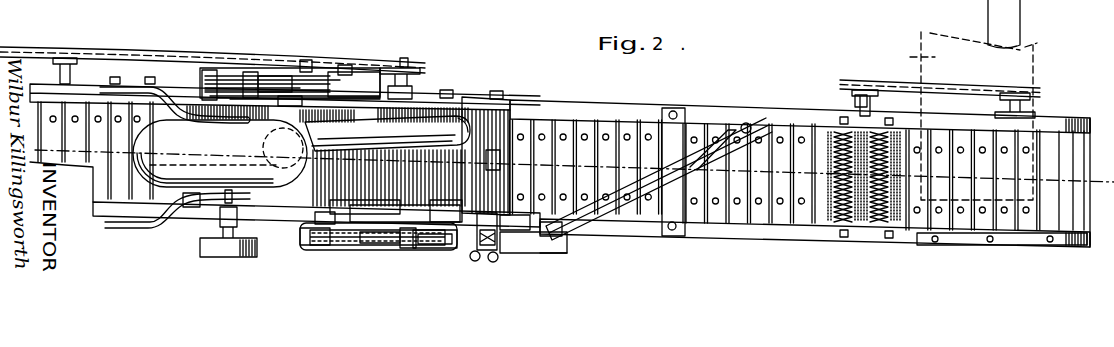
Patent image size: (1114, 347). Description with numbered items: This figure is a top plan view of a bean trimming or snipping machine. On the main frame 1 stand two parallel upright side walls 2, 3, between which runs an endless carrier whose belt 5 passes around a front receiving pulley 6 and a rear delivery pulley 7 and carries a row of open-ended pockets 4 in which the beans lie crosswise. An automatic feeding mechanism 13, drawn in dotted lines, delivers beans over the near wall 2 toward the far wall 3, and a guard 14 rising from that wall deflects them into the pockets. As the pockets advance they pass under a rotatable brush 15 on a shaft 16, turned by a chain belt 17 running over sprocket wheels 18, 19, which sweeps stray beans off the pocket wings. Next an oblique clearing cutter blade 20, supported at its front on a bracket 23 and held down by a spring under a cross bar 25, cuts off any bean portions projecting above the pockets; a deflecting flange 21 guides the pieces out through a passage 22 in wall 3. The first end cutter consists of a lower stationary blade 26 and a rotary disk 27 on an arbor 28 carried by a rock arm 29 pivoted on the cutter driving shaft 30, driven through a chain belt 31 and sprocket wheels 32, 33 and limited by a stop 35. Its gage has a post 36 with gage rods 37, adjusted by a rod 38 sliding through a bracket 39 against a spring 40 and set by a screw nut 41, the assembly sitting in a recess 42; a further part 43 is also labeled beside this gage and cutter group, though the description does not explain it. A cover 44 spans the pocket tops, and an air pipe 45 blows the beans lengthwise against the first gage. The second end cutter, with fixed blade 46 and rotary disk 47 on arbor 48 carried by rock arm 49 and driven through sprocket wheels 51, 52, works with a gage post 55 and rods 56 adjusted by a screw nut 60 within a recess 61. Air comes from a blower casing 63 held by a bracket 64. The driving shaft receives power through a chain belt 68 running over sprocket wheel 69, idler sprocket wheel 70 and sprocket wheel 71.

The main frame 1 is at (990, 24).
The side wall 2 is at (635, 110).
The side wall 3 is at (745, 234).
The pockets 4 is at (451, 285).
The endless belt 5 is at (283, 280).
The front receiving pulley 6 is at (782, 265).
The rear delivery pulley 7 is at (223, 42).
The automatic feeding mechanism 13 is at (961, 116).
The guard 14 is at (968, 234).
The rotatable brush 15 is at (872, 214).
The brush shaft 16 is at (855, 97).
The chain belt 17 is at (945, 89).
The sprocket wheel 18 is at (1018, 93).
The sprocket wheel 19 is at (862, 90).
The clearing cutter blade 20 is at (616, 200).
The deflecting flange 21 is at (706, 122).
The passage 22 is at (603, 230).
The bracket 23 is at (746, 122).
The cross bar 25 is at (680, 236).
The lower stationary cutting blade 26 is at (437, 203).
The rotatable cutter disk 27 is at (425, 249).
The arbor 28 is at (393, 208).
The rock arm 29 is at (350, 250).
The cutter driving shaft 30 is at (313, 250).
The chain belt 31 is at (372, 252).
The lower sprocket wheel 32 is at (322, 214).
The upper sprocket wheel 33 is at (409, 250).
The stop 35 is at (387, 133).
The gage post 36 is at (483, 226).
The gage rods 37 is at (470, 215).
The adjusting rod 38 is at (474, 262).
The bracket 39 is at (533, 242).
The spring 40 is at (516, 222).
The adjusting screw nut 41 is at (499, 262).
The recess 42 is at (365, 208).
The box bottom 43 is at (545, 254).
The cover 44 is at (520, 110).
The air pipe 45 is at (460, 124).
The lower fixed cutter blade 46 is at (210, 107).
The upper rotary cutter disk 47 is at (200, 95).
The arbor 48 is at (240, 88).
The rock arm 49 is at (303, 57).
The sprocket wheel 51 is at (215, 100).
The sprocket wheel 52 is at (354, 84).
The gage post 55 is at (348, 62).
The gage rods 56 is at (285, 106).
The screw nut 60 is at (338, 62).
The recess 61 is at (246, 257).
The blower casing 63 is at (220, 153).
The bracket 64 is at (167, 102).
The chain belt 68 is at (118, 50).
The sprocket wheel 69 is at (38, 38).
The idler sprocket wheel 70 is at (414, 68).
The sprocket wheel 71 is at (318, 62).